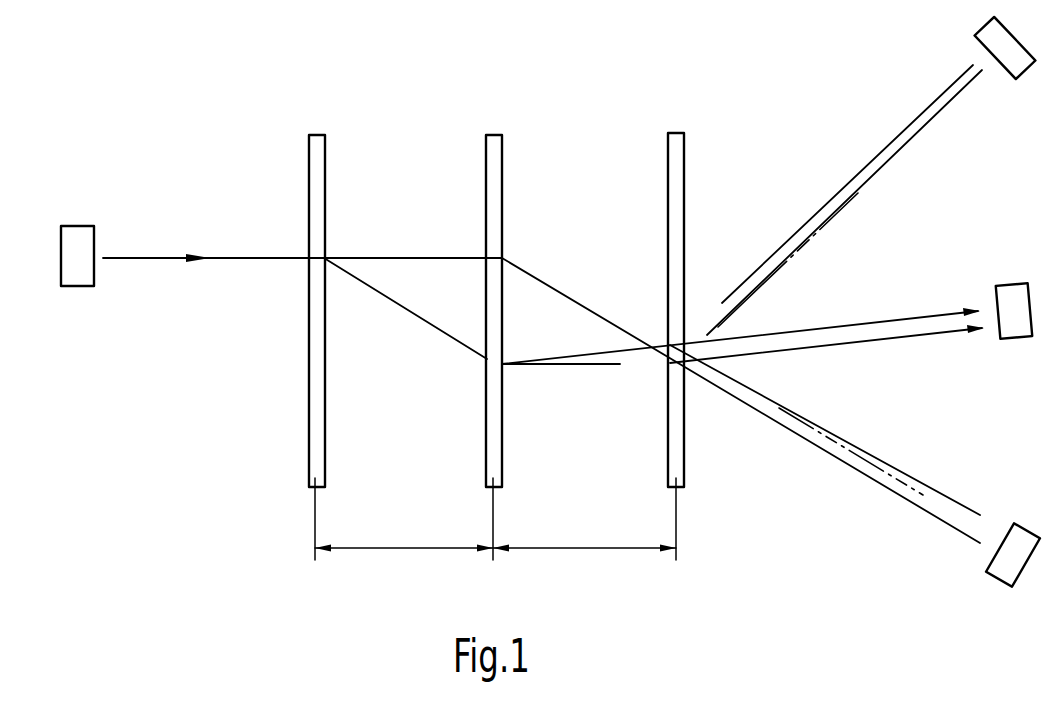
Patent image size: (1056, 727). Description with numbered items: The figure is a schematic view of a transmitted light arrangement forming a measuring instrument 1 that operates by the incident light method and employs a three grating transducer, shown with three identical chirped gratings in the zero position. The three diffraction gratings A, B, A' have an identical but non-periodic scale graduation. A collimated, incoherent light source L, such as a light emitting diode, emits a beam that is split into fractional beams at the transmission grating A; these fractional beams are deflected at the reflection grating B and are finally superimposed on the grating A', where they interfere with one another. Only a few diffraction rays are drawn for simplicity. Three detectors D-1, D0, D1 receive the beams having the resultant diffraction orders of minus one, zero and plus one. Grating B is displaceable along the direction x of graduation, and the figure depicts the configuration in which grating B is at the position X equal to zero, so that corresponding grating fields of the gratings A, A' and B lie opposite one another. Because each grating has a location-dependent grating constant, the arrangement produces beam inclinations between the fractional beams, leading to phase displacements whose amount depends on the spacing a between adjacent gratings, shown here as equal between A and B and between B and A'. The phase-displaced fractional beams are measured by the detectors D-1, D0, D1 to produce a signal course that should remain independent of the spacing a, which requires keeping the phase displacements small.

The light source L is at (80, 230).
The measuring instrument 1 is at (403, 440).
The transmission grating A is at (308, 275).
The reflection grating B is at (500, 137).
The grating A' is at (686, 276).
The displacement position X is at (466, 57).
The direction of graduation x is at (705, 162).
The spacing a is at (495, 519).
The detector D0 is at (1011, 291).
The detector D1 is at (990, 32).
The detector D-1 is at (1000, 575).